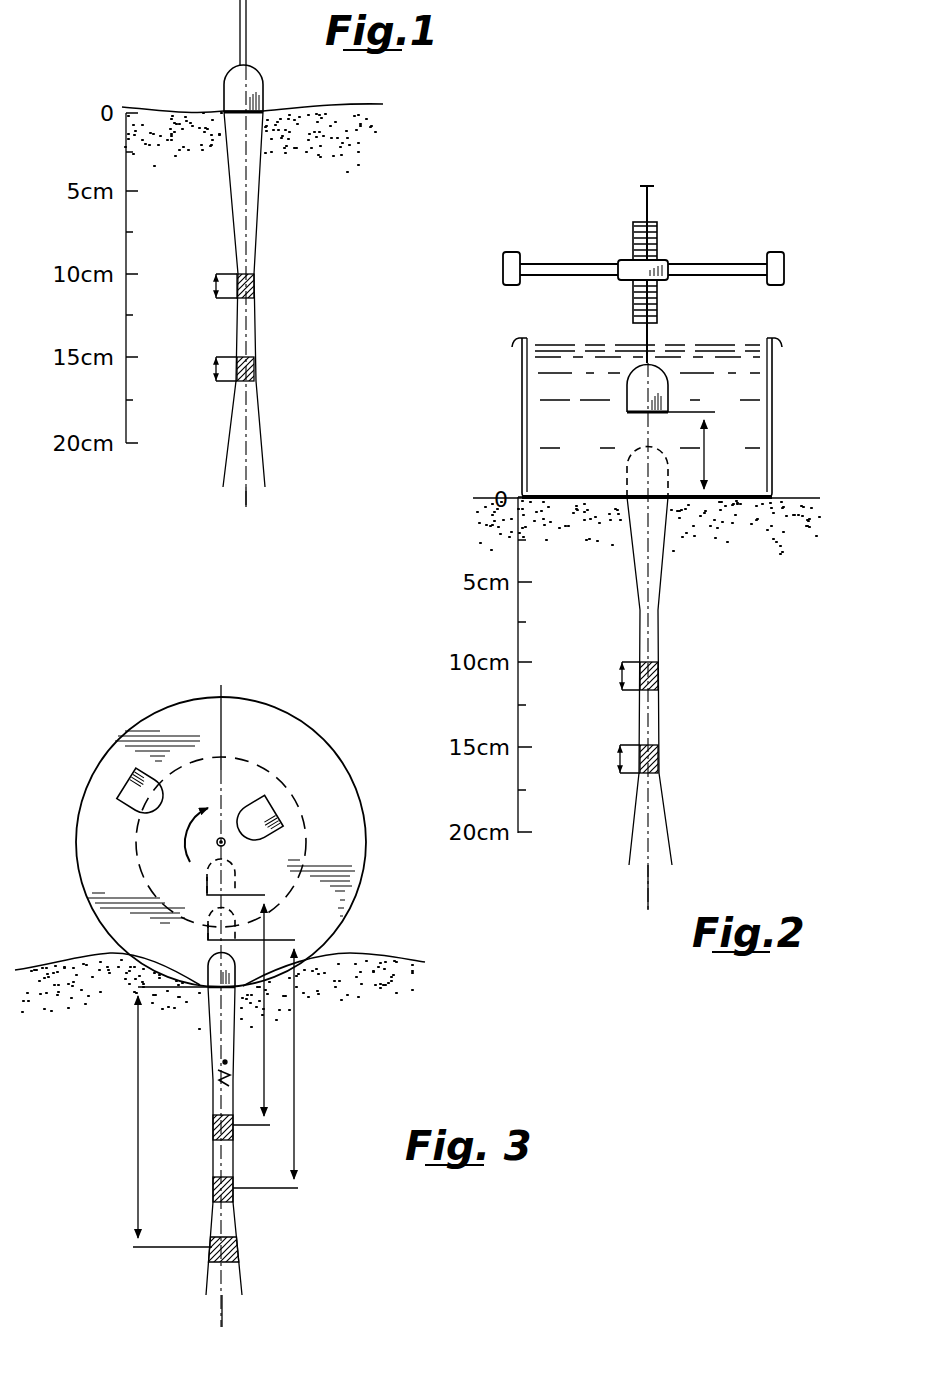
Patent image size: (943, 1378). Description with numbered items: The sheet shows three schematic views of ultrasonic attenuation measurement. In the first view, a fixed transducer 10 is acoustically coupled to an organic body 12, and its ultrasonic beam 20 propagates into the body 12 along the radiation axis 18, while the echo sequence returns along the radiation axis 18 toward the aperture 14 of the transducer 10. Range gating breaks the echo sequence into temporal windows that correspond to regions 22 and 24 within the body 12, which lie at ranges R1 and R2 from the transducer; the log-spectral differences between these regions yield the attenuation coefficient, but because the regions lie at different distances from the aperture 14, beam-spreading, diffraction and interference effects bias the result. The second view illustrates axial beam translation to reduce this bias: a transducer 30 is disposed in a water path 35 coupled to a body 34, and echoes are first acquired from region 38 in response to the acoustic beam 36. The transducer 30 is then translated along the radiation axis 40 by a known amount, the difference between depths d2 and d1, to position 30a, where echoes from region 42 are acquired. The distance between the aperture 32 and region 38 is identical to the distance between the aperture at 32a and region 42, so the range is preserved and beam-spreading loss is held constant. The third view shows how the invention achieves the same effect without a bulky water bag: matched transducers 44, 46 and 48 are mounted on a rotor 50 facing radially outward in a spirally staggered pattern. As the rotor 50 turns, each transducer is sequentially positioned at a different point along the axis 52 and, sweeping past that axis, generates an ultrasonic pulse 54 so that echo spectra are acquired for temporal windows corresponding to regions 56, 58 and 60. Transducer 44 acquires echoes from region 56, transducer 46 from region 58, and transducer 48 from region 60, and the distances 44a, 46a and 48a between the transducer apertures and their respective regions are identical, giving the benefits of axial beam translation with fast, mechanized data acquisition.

In FIG. 1, the transducer 10 is at (263, 94).
In FIG. 1, the organic body 12 is at (369, 176).
In FIG. 1, the aperture 14 is at (243, 113).
In FIG. 1, the radiation axis 18 is at (246, 500).
In FIG. 1, the ultrasonic beam 20 is at (226, 229).
In FIG. 1, the region 22 is at (256, 283).
In FIG. 1, the region 24 is at (256, 370).
In FIG. 1, the range R1 is at (216, 288).
In FIG. 2, the range R1 is at (622, 676).
In FIG. 1, the range R2 is at (216, 371).
In FIG. 2, the range R2 is at (620, 762).
In FIG. 2, the transducer 30 is at (625, 385).
In FIG. 2, the transducer position 30a is at (625, 463).
In FIG. 2, the aperture 32 is at (625, 415).
In FIG. 2, the aperture 32a is at (632, 508).
In FIG. 2, the body 34 is at (742, 576).
In FIG. 2, the water path 35 is at (727, 378).
In FIG. 2, the acoustic beam 36 is at (638, 628).
In FIG. 2, the region 38 is at (660, 680).
In FIG. 2, the radiation axis 40 is at (648, 908).
In FIG. 2, the region 42 is at (662, 762).
In FIG. 2, the depth d1 is at (874, 412).
In FIG. 2, the depth d2 is at (707, 455).
In FIG. 3, the transducer 44 is at (208, 992).
In FIG. 3, the distance 44a is at (136, 1136).
In FIG. 3, the transducer 46 is at (130, 800).
In FIG. 3, the distance 46a is at (296, 1040).
In FIG. 3, the transducer 48 is at (275, 826).
In FIG. 3, the distance 48a is at (266, 1102).
In FIG. 3, the rotor 50 is at (294, 757).
In FIG. 3, the axis 52 is at (223, 1322).
In FIG. 3, the ultrasonic pulse 54 is at (208, 1093).
In FIG. 3, the region 56 is at (210, 1253).
In FIG. 3, the region 58 is at (210, 1187).
In FIG. 3, the region 60 is at (210, 1130).